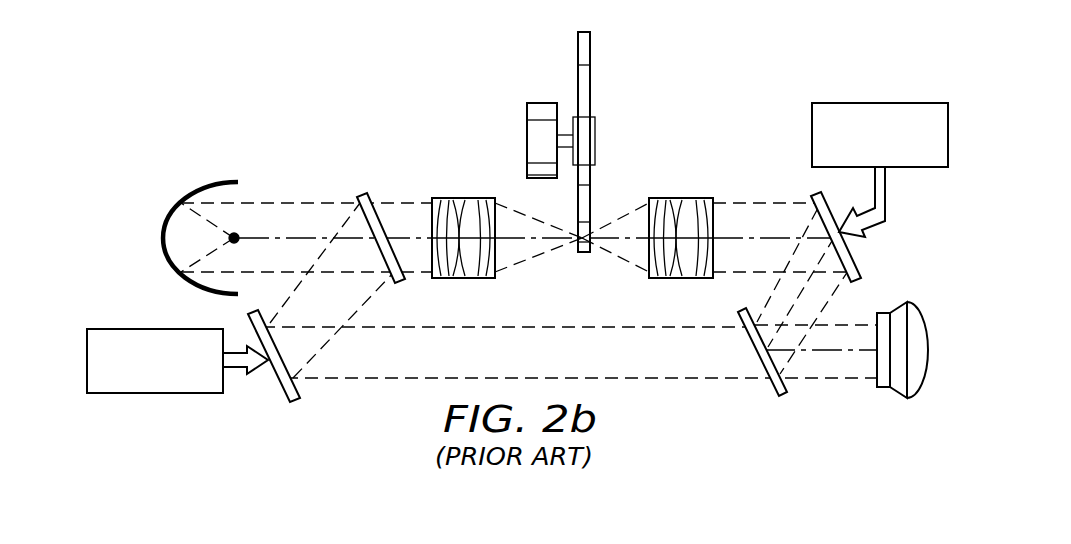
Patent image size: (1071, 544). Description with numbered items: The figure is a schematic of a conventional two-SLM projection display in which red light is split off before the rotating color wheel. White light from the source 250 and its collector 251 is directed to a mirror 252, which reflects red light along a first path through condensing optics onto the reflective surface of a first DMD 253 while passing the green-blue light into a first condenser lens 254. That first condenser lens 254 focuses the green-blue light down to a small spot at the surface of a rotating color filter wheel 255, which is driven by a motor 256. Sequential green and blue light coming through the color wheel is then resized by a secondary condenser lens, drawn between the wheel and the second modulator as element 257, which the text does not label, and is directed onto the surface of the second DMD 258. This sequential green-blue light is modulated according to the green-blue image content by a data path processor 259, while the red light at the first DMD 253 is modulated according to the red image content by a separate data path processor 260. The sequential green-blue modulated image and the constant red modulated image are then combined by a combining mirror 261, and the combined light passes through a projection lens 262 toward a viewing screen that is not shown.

The source 250 is at (240, 231).
The collector 251 is at (170, 220).
The mirror 252 is at (358, 195).
The first DMD 253 is at (282, 392).
The first condenser lens 254 is at (460, 198).
The rotating color filter wheel 255 is at (591, 86).
The motor 256 is at (527, 136).
The lens 257 is at (683, 198).
The second DMD 258 is at (860, 260).
The data path processor 259 is at (880, 103).
The data path processor 260 is at (155, 393).
The combining mirror 261 is at (751, 340).
The projection lens 262 is at (897, 391).